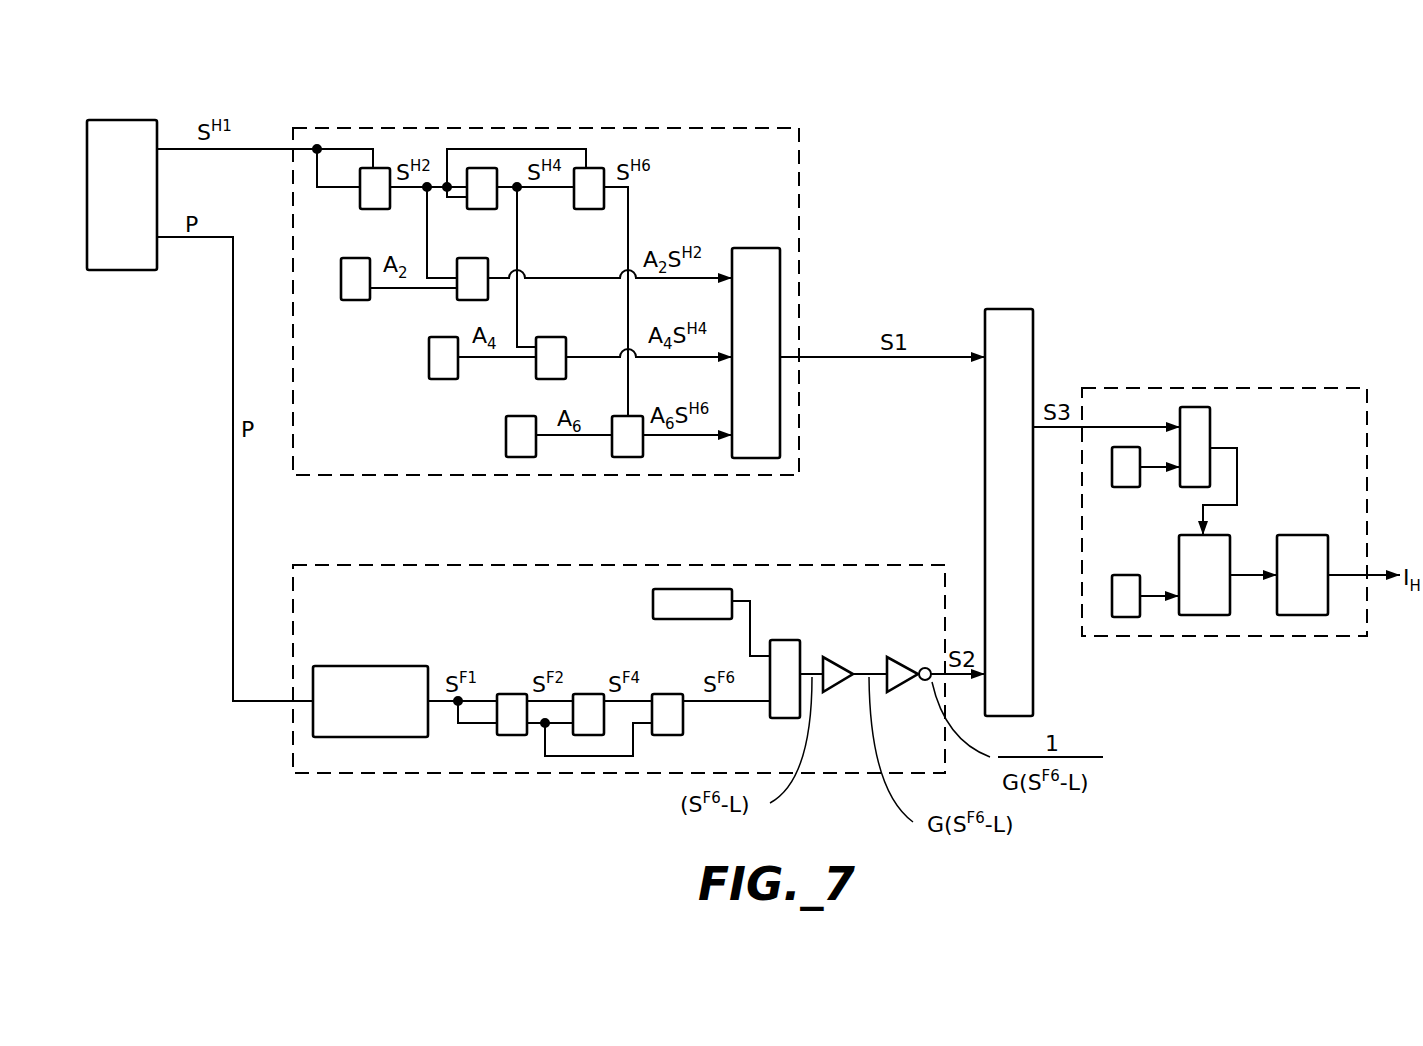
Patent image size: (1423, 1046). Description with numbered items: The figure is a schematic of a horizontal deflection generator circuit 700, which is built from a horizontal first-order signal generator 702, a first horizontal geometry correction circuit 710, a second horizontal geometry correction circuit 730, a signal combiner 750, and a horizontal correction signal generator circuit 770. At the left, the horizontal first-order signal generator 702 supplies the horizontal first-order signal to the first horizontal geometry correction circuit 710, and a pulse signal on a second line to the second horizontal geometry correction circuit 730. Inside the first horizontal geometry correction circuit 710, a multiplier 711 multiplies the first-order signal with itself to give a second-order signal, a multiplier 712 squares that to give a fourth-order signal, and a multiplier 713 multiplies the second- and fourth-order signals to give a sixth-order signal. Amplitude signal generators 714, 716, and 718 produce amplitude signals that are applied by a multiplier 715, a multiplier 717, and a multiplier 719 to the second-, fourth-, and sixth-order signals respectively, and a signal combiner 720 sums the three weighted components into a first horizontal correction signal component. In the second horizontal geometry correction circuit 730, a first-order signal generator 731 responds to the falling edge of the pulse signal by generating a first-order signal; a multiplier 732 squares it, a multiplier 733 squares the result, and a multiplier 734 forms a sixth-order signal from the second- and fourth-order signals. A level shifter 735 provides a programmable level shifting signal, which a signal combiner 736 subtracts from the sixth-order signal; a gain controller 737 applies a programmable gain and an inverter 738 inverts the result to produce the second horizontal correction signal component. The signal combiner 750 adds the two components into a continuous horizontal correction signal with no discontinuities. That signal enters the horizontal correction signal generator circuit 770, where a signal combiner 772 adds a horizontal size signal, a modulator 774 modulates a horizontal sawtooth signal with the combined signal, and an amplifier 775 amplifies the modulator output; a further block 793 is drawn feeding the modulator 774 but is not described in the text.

The horizontal deflection generator circuit 700 is at (880, 78).
The horizontal first-order signal generator 702 is at (113, 120).
The first horizontal geometry correction circuit 710 is at (637, 128).
The multiplier 711 is at (383, 168).
The multiplier 712 is at (481, 168).
The multiplier 713 is at (578, 168).
The amplitude signal generator 714 is at (355, 258).
The multiplier 715 is at (455, 296).
The amplitude signal generator 716 is at (443, 379).
The multiplier 717 is at (544, 379).
The amplitude signal generator 718 is at (520, 457).
The multiplier 719 is at (630, 457).
The signal combiner 720 is at (758, 248).
The second horizontal geometry correction circuit 730 is at (820, 565).
The first-order signal generator 731 is at (410, 666).
The multiplier 732 is at (508, 694).
The multiplier 733 is at (586, 694).
The multiplier 734 is at (668, 694).
The level shifter 735 is at (692, 589).
The signal combiner 736 is at (785, 718).
The gain controller 737 is at (842, 655).
The inverter 738 is at (917, 655).
The signal combiner 750 is at (1008, 309).
The horizontal correction signal generator circuit 770 is at (1300, 388).
The signal combiner 772 is at (1192, 407).
The modulator 774 is at (1200, 615).
The amplifier 775 is at (1300, 615).
The block 793 is at (1125, 617).